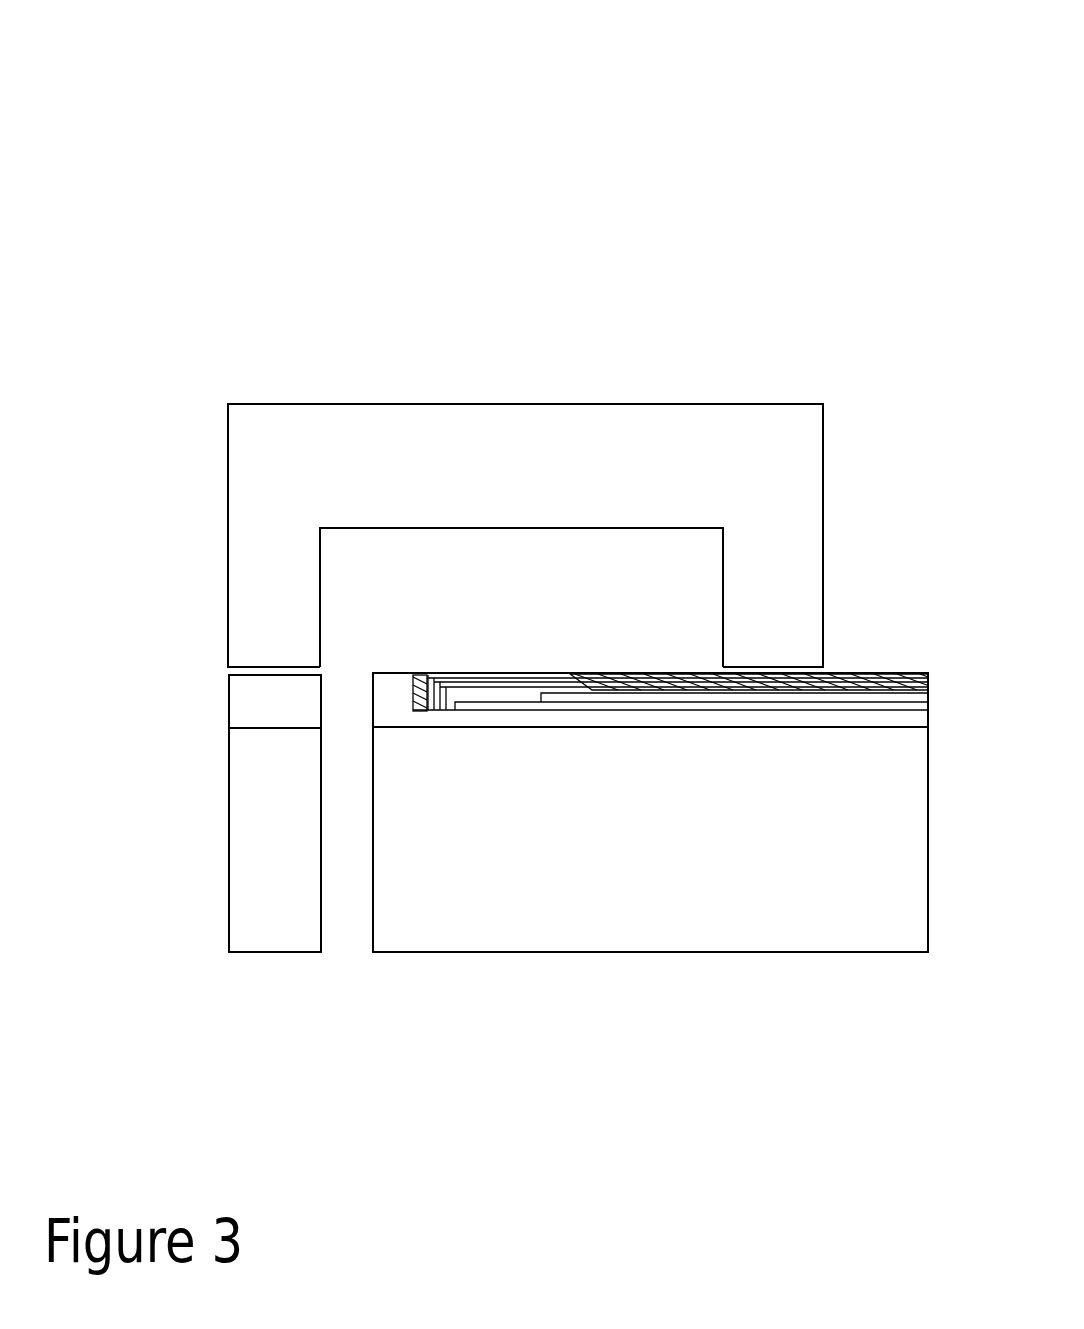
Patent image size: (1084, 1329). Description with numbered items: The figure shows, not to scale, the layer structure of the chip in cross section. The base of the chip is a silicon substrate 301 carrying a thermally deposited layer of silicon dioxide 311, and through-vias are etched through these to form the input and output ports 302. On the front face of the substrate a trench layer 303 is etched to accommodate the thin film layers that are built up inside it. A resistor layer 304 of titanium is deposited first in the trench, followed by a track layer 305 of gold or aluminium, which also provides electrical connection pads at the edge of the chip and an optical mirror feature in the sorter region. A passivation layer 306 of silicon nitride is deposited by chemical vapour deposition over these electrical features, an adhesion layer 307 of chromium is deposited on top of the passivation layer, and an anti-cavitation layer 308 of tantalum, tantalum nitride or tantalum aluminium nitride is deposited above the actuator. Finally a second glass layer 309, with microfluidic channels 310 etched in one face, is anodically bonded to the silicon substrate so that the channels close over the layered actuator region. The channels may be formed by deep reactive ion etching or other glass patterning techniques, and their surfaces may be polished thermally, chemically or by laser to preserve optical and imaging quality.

The silicon substrate 301 is at (258, 838).
The input and output ports 302 is at (352, 877).
The trench layer 303 is at (851, 688).
The resistor layer 304 is at (605, 710).
The track layer 305 is at (580, 698).
The passivation layer 306 is at (525, 691).
The adhesion layer 307 is at (508, 683).
The anti-cavitation layer 308 is at (485, 680).
The second glass layer 309 is at (265, 548).
The microfluidic channels 310 is at (425, 577).
The layer of silicon dioxide 311 is at (265, 702).